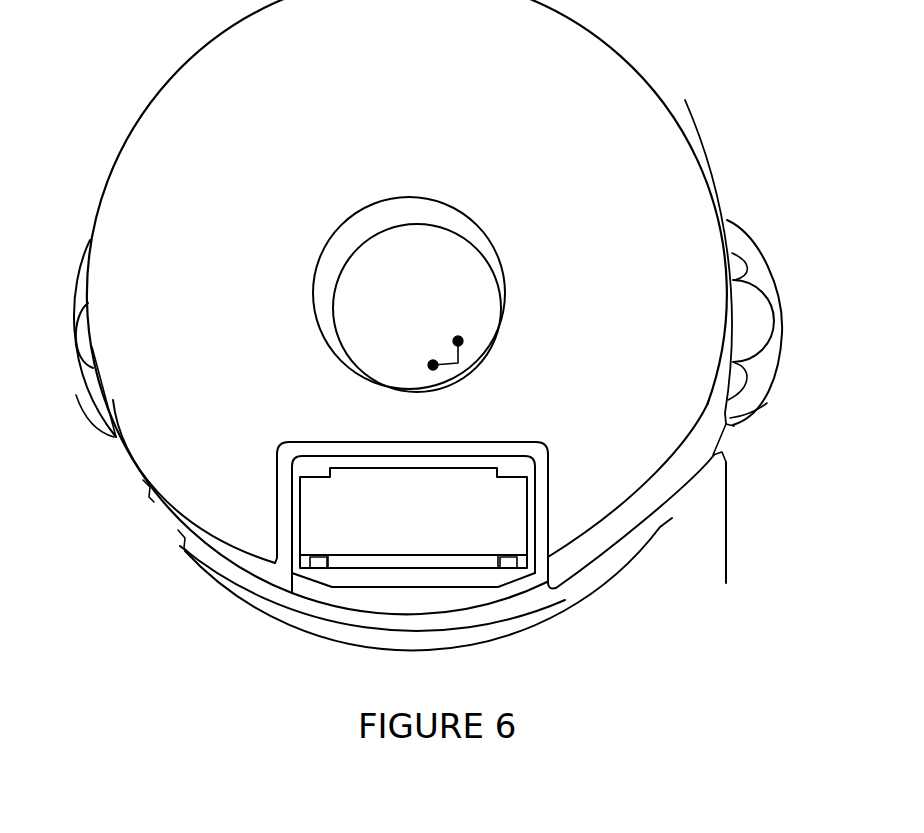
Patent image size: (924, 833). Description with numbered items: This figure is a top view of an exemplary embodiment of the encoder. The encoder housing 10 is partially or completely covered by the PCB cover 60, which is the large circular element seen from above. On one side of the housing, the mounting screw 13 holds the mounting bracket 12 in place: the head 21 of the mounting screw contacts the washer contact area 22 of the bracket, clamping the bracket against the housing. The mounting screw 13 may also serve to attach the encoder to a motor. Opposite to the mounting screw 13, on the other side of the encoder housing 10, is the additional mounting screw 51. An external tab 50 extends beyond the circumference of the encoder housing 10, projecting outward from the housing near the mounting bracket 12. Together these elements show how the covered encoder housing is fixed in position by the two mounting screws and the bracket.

The PCB cover 60 is at (630, 147).
The mounting bracket 12 is at (772, 456).
The encoder housing 10 is at (373, 579).
The additional mounting screw 51 is at (76, 338).
The mounting screw 13 is at (798, 322).
The washer contact area 22 is at (758, 266).
The head 21 is at (750, 334).
The external tab 50 is at (726, 540).